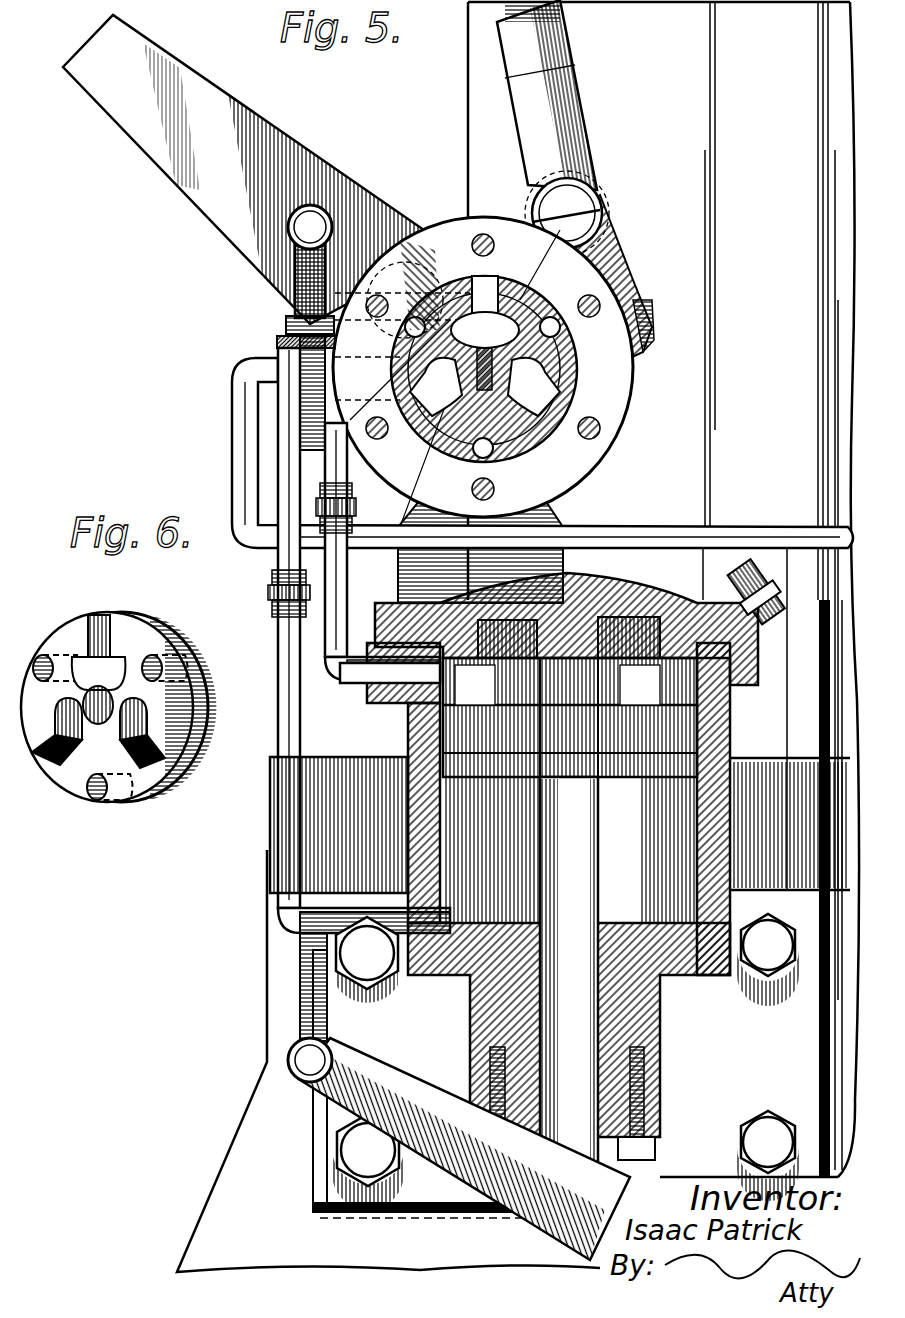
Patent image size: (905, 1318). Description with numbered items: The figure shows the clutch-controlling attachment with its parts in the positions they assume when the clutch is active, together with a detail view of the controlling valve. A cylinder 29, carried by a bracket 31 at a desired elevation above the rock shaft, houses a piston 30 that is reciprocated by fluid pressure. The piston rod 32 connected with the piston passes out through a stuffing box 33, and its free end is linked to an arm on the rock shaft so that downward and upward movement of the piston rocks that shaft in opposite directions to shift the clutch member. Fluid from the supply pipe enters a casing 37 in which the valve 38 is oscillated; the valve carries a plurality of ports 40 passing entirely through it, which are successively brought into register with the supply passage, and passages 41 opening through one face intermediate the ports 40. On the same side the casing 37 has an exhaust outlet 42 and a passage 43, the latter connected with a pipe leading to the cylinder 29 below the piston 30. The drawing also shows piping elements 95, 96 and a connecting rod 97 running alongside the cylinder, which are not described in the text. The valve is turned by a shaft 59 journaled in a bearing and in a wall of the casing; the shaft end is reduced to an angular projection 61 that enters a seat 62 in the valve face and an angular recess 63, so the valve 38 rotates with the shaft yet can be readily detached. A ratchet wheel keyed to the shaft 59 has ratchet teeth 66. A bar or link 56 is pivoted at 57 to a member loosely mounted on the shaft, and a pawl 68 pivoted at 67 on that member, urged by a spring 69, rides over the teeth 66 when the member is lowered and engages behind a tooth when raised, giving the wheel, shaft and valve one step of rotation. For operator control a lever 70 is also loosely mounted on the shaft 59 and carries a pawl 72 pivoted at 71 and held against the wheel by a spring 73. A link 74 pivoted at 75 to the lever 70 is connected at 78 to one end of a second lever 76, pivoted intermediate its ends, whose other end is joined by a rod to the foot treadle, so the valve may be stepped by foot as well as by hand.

In FIG. 5, the cylinder 29 is at (410, 815).
In FIG. 5, the piston 30 is at (700, 735).
In FIG. 5, the bracket 31 is at (380, 1018).
In FIG. 5, the piston rod 32 is at (600, 880).
In FIG. 5, the stuffing box 33 is at (520, 1002).
In FIG. 5, the casing 37 is at (570, 410).
In FIG. 5, the valve 38 is at (506, 325).
In FIG. 6, the valve 38 is at (119, 716).
In FIG. 5, the ports 40 is at (514, 367).
In FIG. 6, the ports 40 is at (40, 660).
In FIG. 5, the passages 41 is at (494, 246).
In FIG. 5, the exhaust outlet 42 is at (473, 326).
In FIG. 5, the passage 43 is at (500, 300).
In FIG. 5, the bar or link 56 is at (570, 50).
In FIG. 5, the pivot 57 is at (598, 210).
In FIG. 5, the shaft 59 is at (417, 462).
In FIG. 5, the projection 61 is at (495, 445).
In FIG. 6, the projection 61 is at (90, 625).
In FIG. 5, the seat 62 is at (575, 378).
In FIG. 6, the seat 62 is at (50, 735).
In FIG. 5, the recess 63 is at (534, 387).
In FIG. 6, the recess 63 is at (112, 765).
In FIG. 5, the ratchet teeth 66 is at (625, 442).
In FIG. 5, the pivot 67 is at (669, 326).
In FIG. 5, the pawl 68 is at (640, 318).
In FIG. 5, the spring 69 is at (615, 250).
In FIG. 5, the lever 70 is at (180, 178).
In FIG. 5, the pivot 71 is at (390, 235).
In FIG. 5, the pawl 72 is at (355, 228).
In FIG. 5, the spring 73 is at (288, 310).
In FIG. 5, the link 74 is at (300, 265).
In FIG. 5, the pivot 75 is at (290, 220).
In FIG. 5, the lever 76 is at (445, 1165).
In FIG. 5, the pivot 78 is at (300, 1080).
In FIG. 5, the pipe 95 is at (278, 333).
In FIG. 5, the pipe 96 is at (345, 600).
In FIG. 5, the connecting rod 97 is at (735, 527).